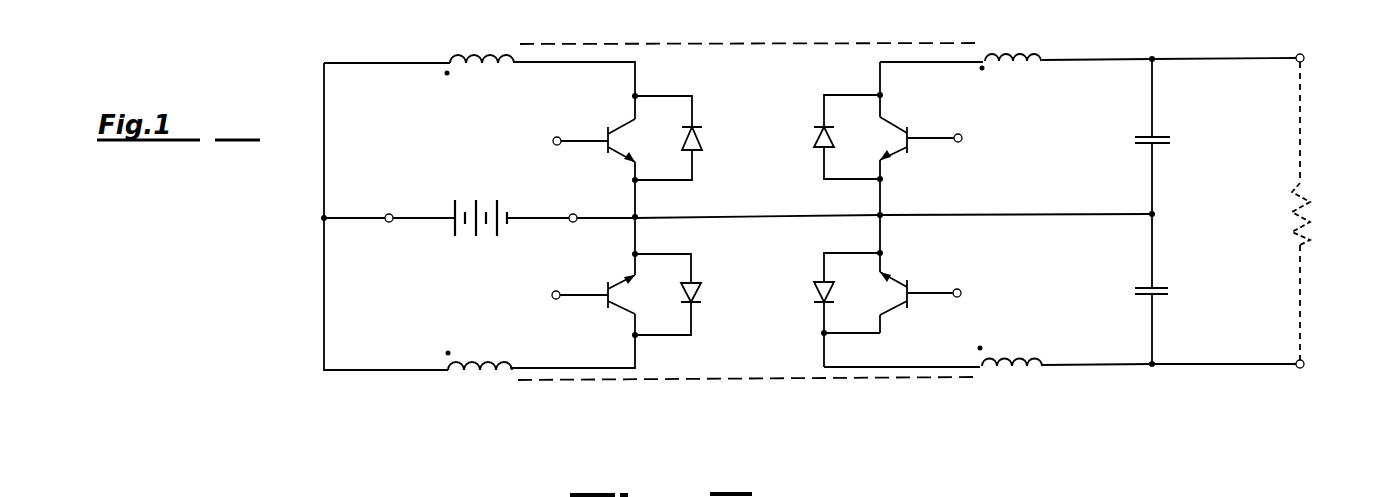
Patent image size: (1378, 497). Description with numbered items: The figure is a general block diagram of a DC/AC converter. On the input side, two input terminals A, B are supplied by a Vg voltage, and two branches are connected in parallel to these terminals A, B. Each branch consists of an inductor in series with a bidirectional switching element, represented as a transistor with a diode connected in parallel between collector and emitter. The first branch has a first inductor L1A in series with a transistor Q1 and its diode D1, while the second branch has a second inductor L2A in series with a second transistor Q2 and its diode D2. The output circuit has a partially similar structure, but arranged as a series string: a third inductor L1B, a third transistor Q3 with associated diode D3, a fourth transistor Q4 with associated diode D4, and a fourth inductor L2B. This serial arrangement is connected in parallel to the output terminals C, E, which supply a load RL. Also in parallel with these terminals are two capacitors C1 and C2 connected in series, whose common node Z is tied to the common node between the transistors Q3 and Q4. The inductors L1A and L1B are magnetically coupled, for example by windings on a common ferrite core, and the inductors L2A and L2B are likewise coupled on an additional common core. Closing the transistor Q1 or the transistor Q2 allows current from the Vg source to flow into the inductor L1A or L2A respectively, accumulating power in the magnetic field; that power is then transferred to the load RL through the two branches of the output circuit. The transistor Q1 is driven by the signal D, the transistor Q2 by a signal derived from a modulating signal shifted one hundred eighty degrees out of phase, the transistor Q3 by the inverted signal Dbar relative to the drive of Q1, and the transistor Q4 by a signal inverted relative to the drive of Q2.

The first inductor L1A is at (513, 44).
The second inductor L2A is at (510, 380).
The third inductor L1B is at (1042, 42).
The fourth inductor L2B is at (1042, 377).
The Vg voltage Vg is at (481, 201).
The input terminal A is at (388, 204).
The input terminal B is at (572, 204).
The output terminal C is at (1301, 43).
The output terminal E is at (1294, 385).
The common node Z is at (1133, 231).
The driving signal D is at (545, 138).
The inverted driving signal Dbar is at (988, 122).
The transistor Q1 is at (598, 151).
The second transistor Q2 is at (597, 308).
The third transistor Q3 is at (917, 130).
The fourth transistor Q4 is at (916, 307).
The diode D1 is at (689, 138).
The diode D2 is at (688, 294).
The diode D3 is at (831, 137).
The diode D4 is at (829, 310).
The capacitor C1 is at (1166, 136).
The capacitor C2 is at (1170, 289).
The load RL is at (1320, 211).